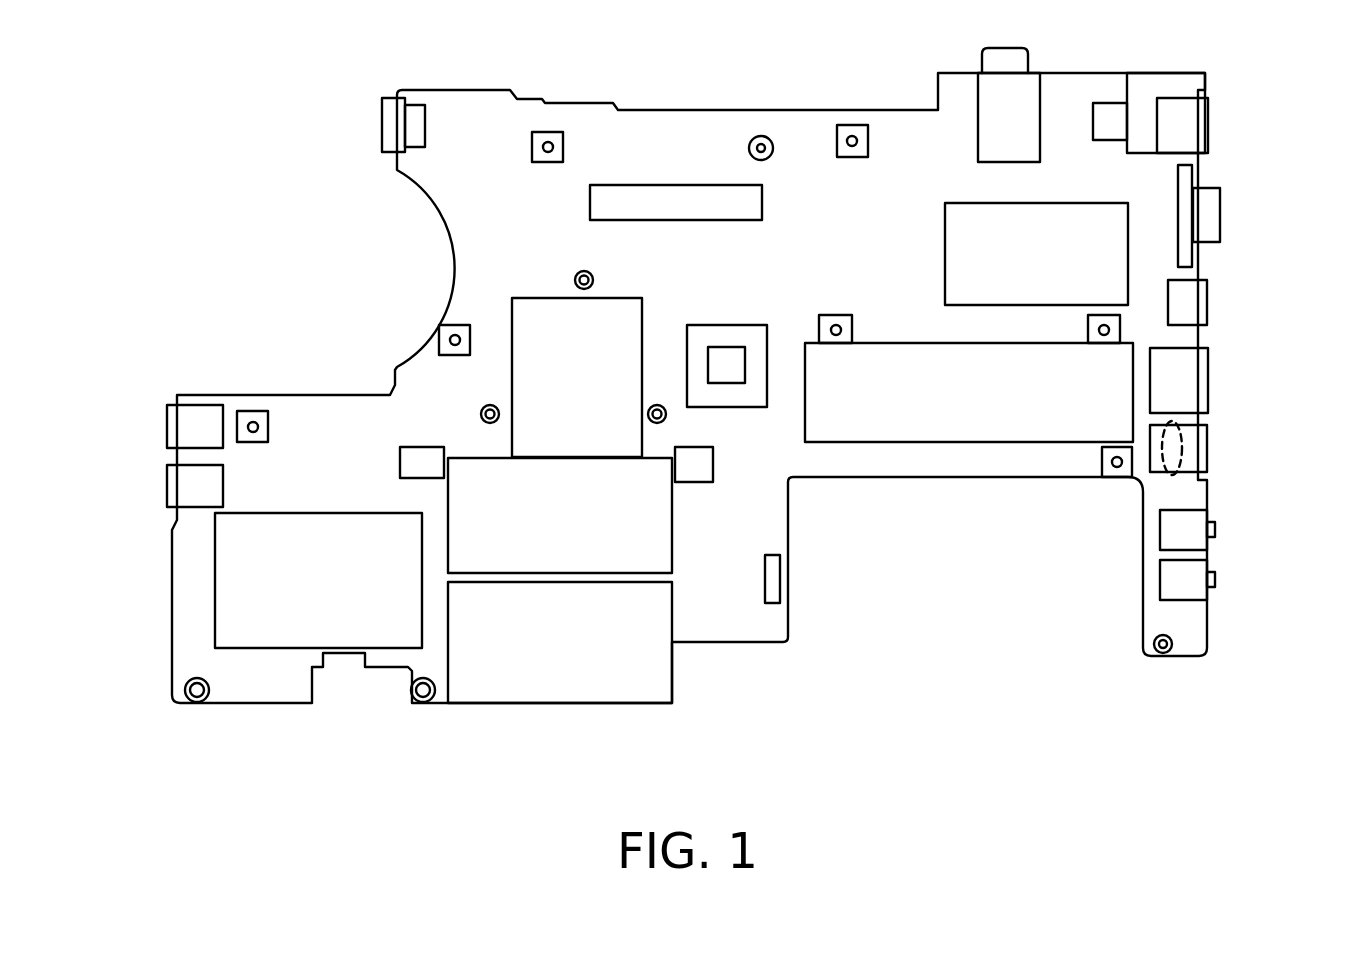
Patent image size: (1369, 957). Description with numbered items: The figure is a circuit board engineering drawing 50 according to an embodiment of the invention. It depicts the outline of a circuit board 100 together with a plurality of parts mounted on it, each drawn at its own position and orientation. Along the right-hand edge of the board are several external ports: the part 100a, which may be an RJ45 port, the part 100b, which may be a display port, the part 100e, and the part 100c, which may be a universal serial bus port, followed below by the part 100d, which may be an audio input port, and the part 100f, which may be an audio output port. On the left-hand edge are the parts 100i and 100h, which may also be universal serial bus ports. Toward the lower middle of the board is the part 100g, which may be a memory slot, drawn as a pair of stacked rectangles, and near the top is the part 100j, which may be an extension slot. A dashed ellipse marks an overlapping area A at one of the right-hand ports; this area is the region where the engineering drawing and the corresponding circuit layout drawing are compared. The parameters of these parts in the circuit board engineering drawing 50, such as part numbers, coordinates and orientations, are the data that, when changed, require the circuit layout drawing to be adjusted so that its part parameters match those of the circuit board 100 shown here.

The circuit board engineering drawing 50 is at (290, 215).
The circuit board 100 is at (813, 143).
The part 100a is at (1193, 125).
The part 100b is at (1210, 216).
The part 100c is at (1192, 450).
The part 100d is at (1192, 530).
The part 100e is at (1193, 300).
The part 100f is at (1192, 582).
The part 100g is at (558, 540).
The part 100h is at (188, 488).
The part 100i is at (188, 428).
The part 100j is at (690, 197).
The overlapping area A is at (1168, 473).